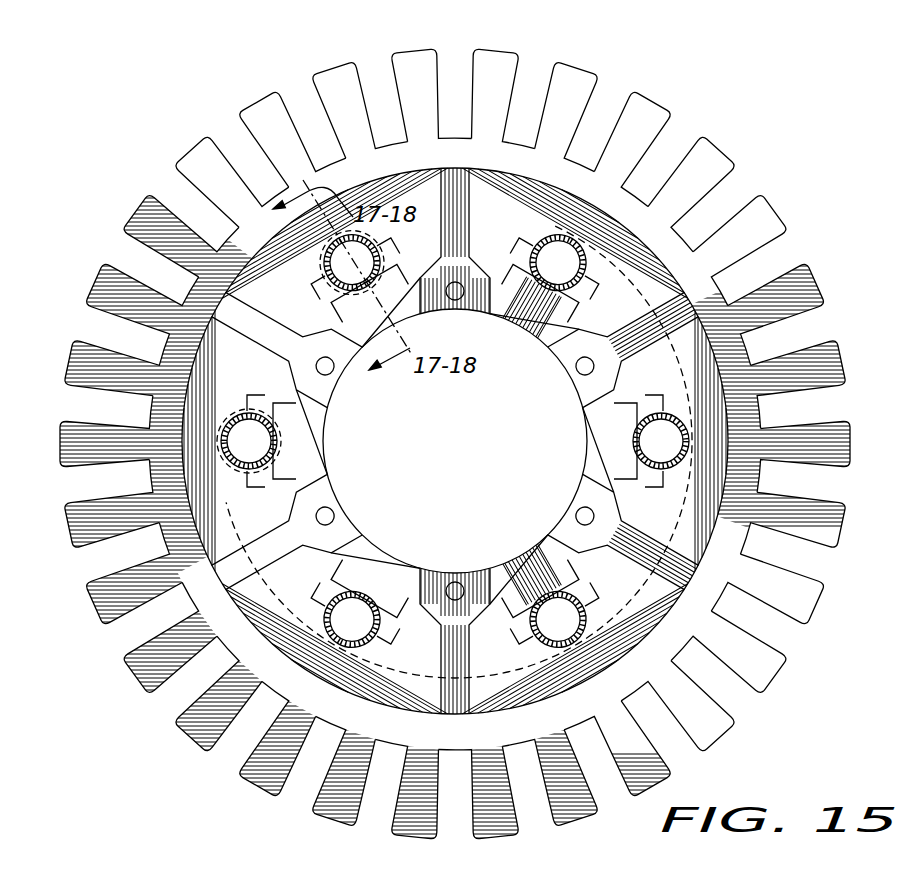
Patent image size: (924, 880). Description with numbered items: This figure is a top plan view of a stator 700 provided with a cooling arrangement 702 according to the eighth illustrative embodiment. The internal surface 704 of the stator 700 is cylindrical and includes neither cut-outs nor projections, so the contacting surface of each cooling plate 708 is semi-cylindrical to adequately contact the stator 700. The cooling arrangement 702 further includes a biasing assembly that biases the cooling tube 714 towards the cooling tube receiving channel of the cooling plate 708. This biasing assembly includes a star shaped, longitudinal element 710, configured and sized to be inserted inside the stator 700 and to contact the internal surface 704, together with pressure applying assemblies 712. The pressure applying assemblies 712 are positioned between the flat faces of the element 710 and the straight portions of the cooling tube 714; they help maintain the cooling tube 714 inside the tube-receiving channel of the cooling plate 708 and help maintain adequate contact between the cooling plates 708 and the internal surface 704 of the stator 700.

The stator 700 is at (780, 185).
The cooling arrangement 702 is at (572, 441).
The internal surface 704 is at (520, 200).
The cooling plate 708 is at (650, 258).
The star shaped longitudinal element 710 is at (498, 318).
The pressure applying assembly 712 is at (538, 300).
The cooling tube 714 is at (633, 267).